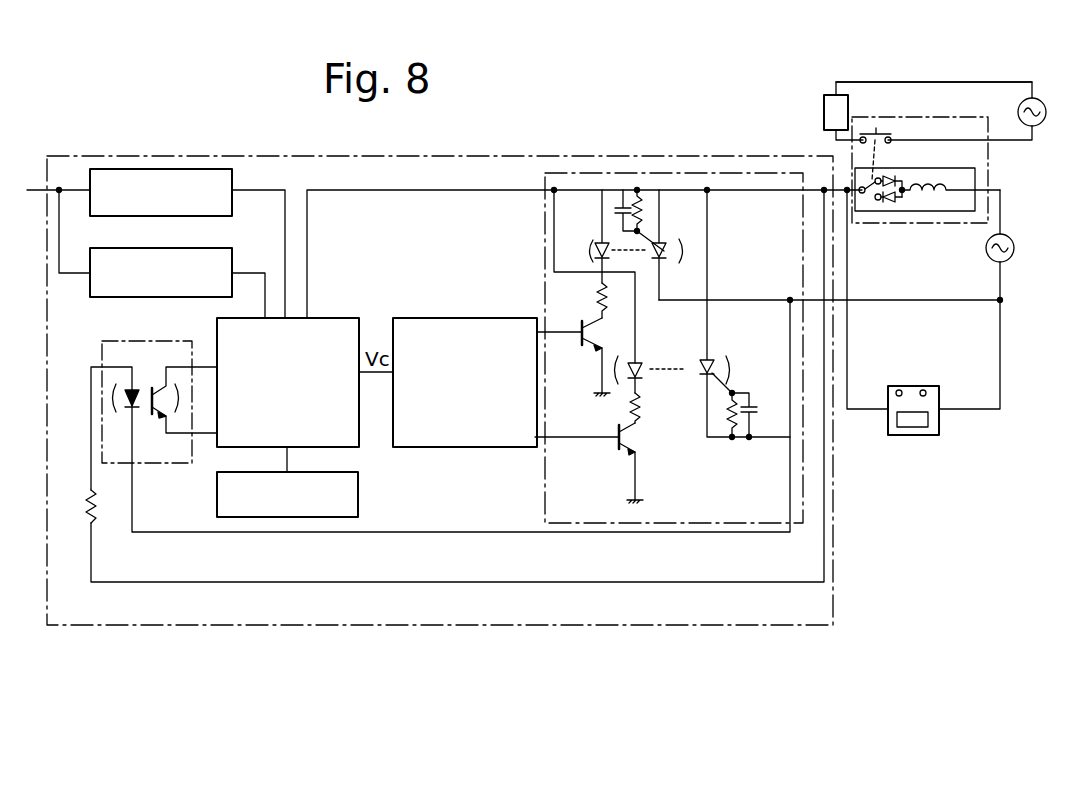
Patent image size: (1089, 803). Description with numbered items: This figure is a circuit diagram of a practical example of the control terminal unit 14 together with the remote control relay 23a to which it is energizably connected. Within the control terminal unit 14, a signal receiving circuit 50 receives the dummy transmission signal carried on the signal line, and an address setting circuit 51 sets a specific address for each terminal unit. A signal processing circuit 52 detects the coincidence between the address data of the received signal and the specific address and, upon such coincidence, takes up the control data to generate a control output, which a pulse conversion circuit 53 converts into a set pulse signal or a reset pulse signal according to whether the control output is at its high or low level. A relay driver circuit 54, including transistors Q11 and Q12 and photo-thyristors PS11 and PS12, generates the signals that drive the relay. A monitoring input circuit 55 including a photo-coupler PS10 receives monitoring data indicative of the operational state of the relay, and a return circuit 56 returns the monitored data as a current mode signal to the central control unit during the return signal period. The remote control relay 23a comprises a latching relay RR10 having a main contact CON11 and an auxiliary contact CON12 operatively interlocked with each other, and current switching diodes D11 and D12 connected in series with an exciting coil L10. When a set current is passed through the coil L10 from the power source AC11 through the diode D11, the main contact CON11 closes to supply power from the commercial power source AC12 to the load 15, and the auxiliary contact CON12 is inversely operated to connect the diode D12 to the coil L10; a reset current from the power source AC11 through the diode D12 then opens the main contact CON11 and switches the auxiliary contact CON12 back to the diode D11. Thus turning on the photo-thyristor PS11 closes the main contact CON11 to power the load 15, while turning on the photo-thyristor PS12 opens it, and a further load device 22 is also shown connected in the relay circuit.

The control terminal unit 14 is at (102, 617).
The load 15 is at (824, 108).
The load / outlet 22 is at (930, 420).
The remote control relay 23a is at (937, 123).
The signal receiving circuit 50 is at (232, 173).
The address setting circuit 51 is at (358, 500).
The signal processing circuit 52 is at (330, 318).
The pulse conversion circuit 53 is at (452, 318).
The relay driver circuit 54 is at (545, 224).
The monitoring input circuit 55 is at (102, 348).
The return circuit 56 is at (232, 252).
The photocoupler PS10 is at (147, 417).
The photo-thyristor PS11 is at (645, 233).
The photo-thyristor PS12 is at (666, 362).
The transistor Q11 is at (590, 293).
The transistor Q12 is at (610, 429).
The main contact CON11 is at (869, 128).
The auxiliary contact CON12 is at (874, 201).
The current switching diode D11 is at (891, 178).
The current switching diode D12 is at (895, 200).
The latching relay RR10 is at (988, 165).
The exciting coil L10 is at (942, 196).
The AC power source AC11 is at (1027, 258).
The commercial power source AC12 is at (1053, 102).